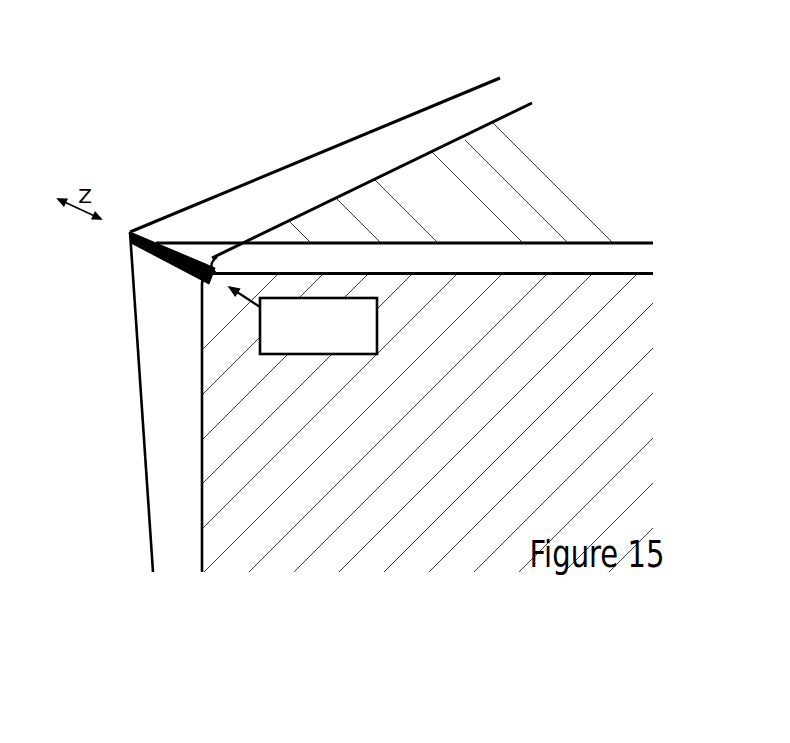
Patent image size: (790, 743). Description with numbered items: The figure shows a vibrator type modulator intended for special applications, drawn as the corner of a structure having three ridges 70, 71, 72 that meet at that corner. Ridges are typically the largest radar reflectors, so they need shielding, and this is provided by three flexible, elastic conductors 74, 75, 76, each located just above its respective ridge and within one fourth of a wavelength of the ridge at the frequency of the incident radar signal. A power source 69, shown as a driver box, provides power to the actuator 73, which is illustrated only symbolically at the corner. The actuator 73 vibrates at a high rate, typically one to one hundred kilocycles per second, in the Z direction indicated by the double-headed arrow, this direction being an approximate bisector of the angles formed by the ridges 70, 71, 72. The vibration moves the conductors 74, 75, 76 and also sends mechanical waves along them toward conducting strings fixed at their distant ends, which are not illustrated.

The power source 69 is at (347, 354).
The ridge 70 is at (567, 275).
The ridge 71 is at (510, 113).
The ridge 72 is at (202, 459).
The actuator 73 is at (142, 251).
The flexible, elastic conductor 74 is at (413, 242).
The flexible, elastic conductor 75 is at (347, 141).
The flexible, elastic conductor 76 is at (143, 430).